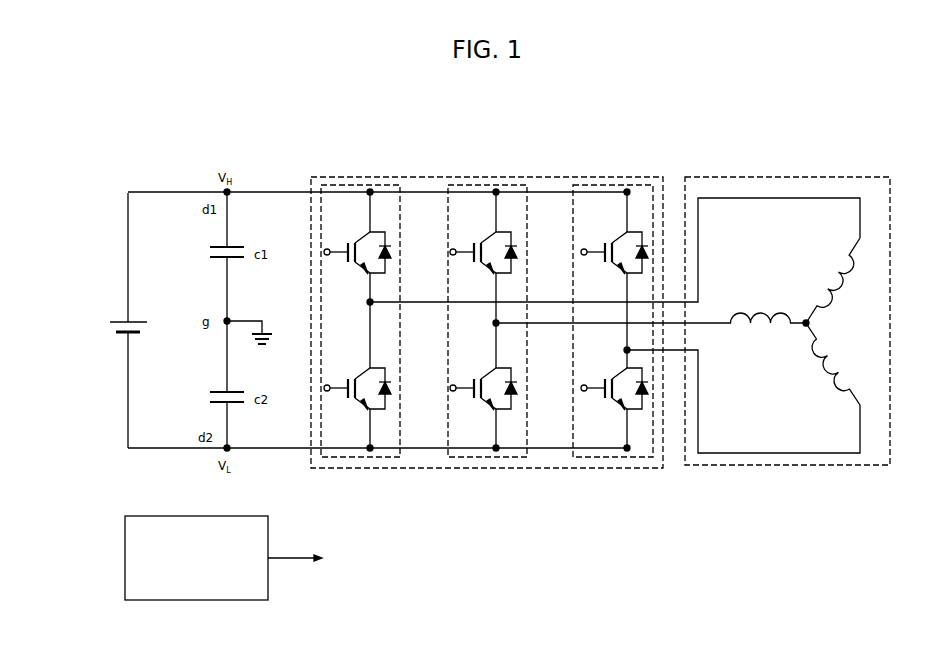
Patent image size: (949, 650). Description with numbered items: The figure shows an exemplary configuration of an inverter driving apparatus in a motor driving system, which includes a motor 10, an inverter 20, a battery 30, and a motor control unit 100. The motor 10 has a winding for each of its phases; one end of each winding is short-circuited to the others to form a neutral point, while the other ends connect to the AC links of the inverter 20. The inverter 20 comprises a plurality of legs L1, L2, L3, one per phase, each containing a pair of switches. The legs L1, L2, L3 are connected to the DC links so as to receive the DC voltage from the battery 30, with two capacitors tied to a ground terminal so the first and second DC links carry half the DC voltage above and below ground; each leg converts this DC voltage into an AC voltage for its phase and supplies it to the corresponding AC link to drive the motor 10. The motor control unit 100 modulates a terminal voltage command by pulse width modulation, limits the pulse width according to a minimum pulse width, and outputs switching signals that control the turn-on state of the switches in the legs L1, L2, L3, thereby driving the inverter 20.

The motor 10 is at (876, 179).
The inverter 20 is at (506, 302).
The battery 30 is at (135, 318).
The motor control unit 100 is at (272, 532).
The leg L1 is at (358, 183).
The leg L2 is at (484, 183).
The leg L3 is at (611, 183).